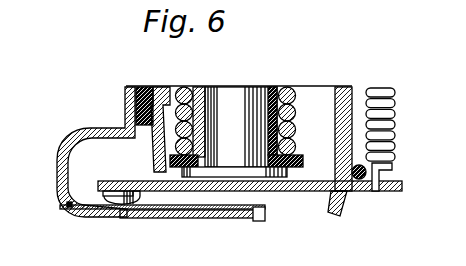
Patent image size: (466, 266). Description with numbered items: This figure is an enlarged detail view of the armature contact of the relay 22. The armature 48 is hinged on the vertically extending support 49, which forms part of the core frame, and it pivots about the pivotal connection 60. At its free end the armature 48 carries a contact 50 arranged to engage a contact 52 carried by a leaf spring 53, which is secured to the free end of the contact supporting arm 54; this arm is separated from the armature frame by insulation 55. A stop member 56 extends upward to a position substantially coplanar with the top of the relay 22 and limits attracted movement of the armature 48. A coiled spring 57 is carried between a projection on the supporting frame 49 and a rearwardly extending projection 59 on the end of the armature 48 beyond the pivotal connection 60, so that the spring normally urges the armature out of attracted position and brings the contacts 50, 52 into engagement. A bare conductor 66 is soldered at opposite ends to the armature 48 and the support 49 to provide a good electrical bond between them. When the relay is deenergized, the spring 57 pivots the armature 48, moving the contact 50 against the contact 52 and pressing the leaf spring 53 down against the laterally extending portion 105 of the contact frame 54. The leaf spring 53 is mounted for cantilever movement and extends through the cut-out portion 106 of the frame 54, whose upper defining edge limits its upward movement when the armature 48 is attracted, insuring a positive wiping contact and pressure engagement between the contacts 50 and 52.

The relay 22 is at (257, 87).
The armature 48 is at (313, 192).
The vertically extending support 49 is at (197, 87).
The contact 50 is at (139, 217).
The contact 52 is at (112, 208).
The leaf spring 53 is at (90, 209).
The contact supporting arm 54 is at (125, 104).
The insulation 55 is at (150, 87).
The stop member 56 is at (158, 86).
The coiled spring 57 is at (380, 96).
The rearwardly extending projection 59 is at (381, 195).
The pivotal connection 60 is at (349, 193).
The bare conductor 66 is at (334, 150).
The laterally extending portion 105 is at (200, 219).
The cut-out portion 106 is at (63, 204).